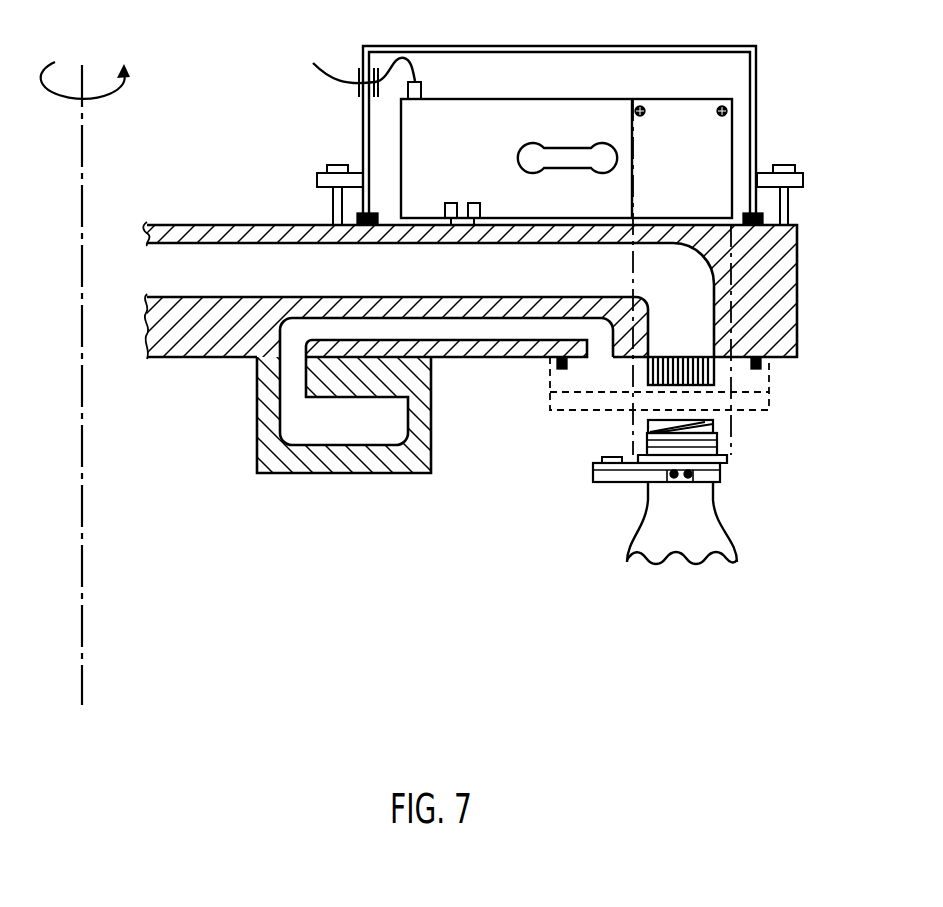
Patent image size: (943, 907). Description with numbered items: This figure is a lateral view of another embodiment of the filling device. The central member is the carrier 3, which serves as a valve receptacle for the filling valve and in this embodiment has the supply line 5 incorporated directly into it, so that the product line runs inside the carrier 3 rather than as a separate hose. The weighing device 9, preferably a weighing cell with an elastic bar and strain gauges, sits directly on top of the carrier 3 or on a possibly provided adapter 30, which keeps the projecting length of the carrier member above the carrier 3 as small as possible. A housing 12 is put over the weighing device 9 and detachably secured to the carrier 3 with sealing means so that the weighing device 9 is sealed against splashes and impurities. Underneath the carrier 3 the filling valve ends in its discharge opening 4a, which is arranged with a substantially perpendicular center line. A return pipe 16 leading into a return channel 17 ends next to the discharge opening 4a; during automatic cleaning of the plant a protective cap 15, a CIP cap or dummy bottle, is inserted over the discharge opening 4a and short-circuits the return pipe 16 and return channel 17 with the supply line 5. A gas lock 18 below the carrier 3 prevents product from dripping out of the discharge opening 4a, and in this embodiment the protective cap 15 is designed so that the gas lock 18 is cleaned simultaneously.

The weighing device 9 is at (573, 99).
The housing 12 is at (757, 77).
The supply line 5 is at (192, 255).
The carrier 3 is at (396, 356).
The adapter 30 is at (185, 350).
The return pipe 16 is at (510, 333).
The return channel 17 is at (392, 424).
The gas lock 18 is at (646, 372).
The discharge opening 4a is at (720, 359).
The protective cap 15 is at (758, 404).